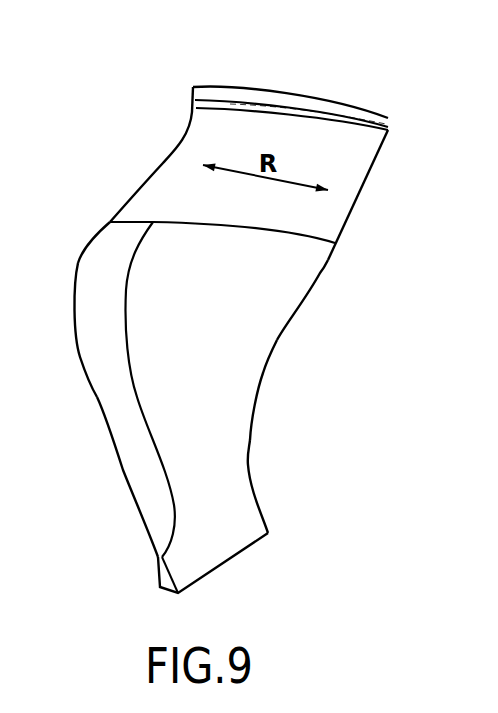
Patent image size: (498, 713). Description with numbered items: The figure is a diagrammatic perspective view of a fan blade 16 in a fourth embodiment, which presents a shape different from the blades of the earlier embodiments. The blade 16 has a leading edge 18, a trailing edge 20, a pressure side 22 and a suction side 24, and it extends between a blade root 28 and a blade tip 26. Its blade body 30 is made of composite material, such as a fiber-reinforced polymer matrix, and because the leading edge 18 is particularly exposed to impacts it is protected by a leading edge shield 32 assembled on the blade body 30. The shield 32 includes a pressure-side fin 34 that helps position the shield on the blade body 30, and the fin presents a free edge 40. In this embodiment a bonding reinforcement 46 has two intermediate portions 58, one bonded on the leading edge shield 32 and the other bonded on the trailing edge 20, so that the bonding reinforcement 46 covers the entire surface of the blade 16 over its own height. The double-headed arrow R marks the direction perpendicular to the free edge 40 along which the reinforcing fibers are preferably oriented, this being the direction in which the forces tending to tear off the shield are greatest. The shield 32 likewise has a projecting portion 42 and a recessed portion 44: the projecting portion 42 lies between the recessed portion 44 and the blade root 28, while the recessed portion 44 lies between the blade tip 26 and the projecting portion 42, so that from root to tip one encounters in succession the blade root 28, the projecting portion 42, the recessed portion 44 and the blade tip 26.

The blade 16 is at (137, 92).
The leading edge 18 is at (80, 355).
The trailing edge 20 is at (286, 330).
The pressure side 22 is at (230, 383).
The suction side 24 is at (268, 85).
The blade tip 26 is at (320, 92).
The blade root 28 is at (247, 573).
The blade body 30 is at (228, 453).
The leading edge shield 32 is at (85, 455).
The pressure-side fin 34 is at (222, 98).
The free edge 40 is at (127, 337).
The projecting portion 42 is at (80, 253).
The recessed portion 44 is at (162, 152).
The bonding reinforcement 46 is at (338, 172).
The intermediate portions 58 is at (163, 163).